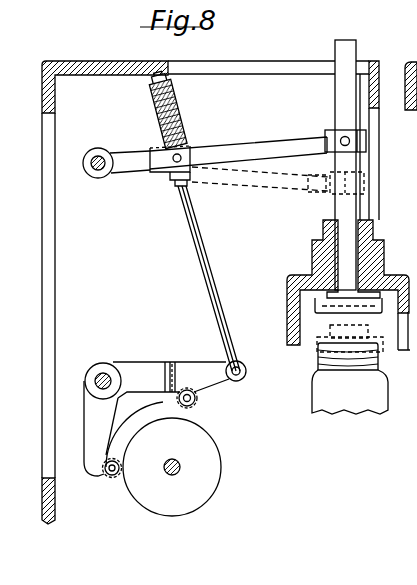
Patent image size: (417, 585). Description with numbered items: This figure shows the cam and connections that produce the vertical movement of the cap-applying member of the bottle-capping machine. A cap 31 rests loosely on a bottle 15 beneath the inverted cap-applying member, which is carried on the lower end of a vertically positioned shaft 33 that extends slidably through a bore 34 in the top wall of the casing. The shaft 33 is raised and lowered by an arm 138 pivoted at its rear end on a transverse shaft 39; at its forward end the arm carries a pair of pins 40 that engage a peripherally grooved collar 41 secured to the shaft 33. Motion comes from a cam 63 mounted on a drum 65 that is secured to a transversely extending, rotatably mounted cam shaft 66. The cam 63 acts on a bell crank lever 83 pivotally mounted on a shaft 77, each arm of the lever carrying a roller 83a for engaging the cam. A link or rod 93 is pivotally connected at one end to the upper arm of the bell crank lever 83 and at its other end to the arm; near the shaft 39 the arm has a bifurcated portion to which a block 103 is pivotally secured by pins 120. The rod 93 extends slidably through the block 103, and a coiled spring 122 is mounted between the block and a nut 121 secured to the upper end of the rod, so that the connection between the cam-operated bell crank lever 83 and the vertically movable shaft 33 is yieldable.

The jar 15 is at (350, 392).
The cap 31 is at (379, 354).
The shaft 33 is at (335, 96).
The bore 34 is at (383, 265).
The shaft 39 is at (99, 152).
The pins 40 is at (352, 144).
The peripherally grooved collar 41 is at (362, 134).
The cam 63 is at (136, 414).
The drum 65 is at (156, 506).
The shaft 66 is at (180, 476).
The shaft 77 is at (103, 374).
The bell crank lever 83 is at (146, 368).
The roller 83a is at (197, 405).
The link 93 is at (205, 226).
The block 103 is at (178, 180).
The pins 120 is at (183, 156).
The nut 121 is at (168, 84).
The coiled spring 122 is at (173, 103).
The arm 138 is at (258, 147).